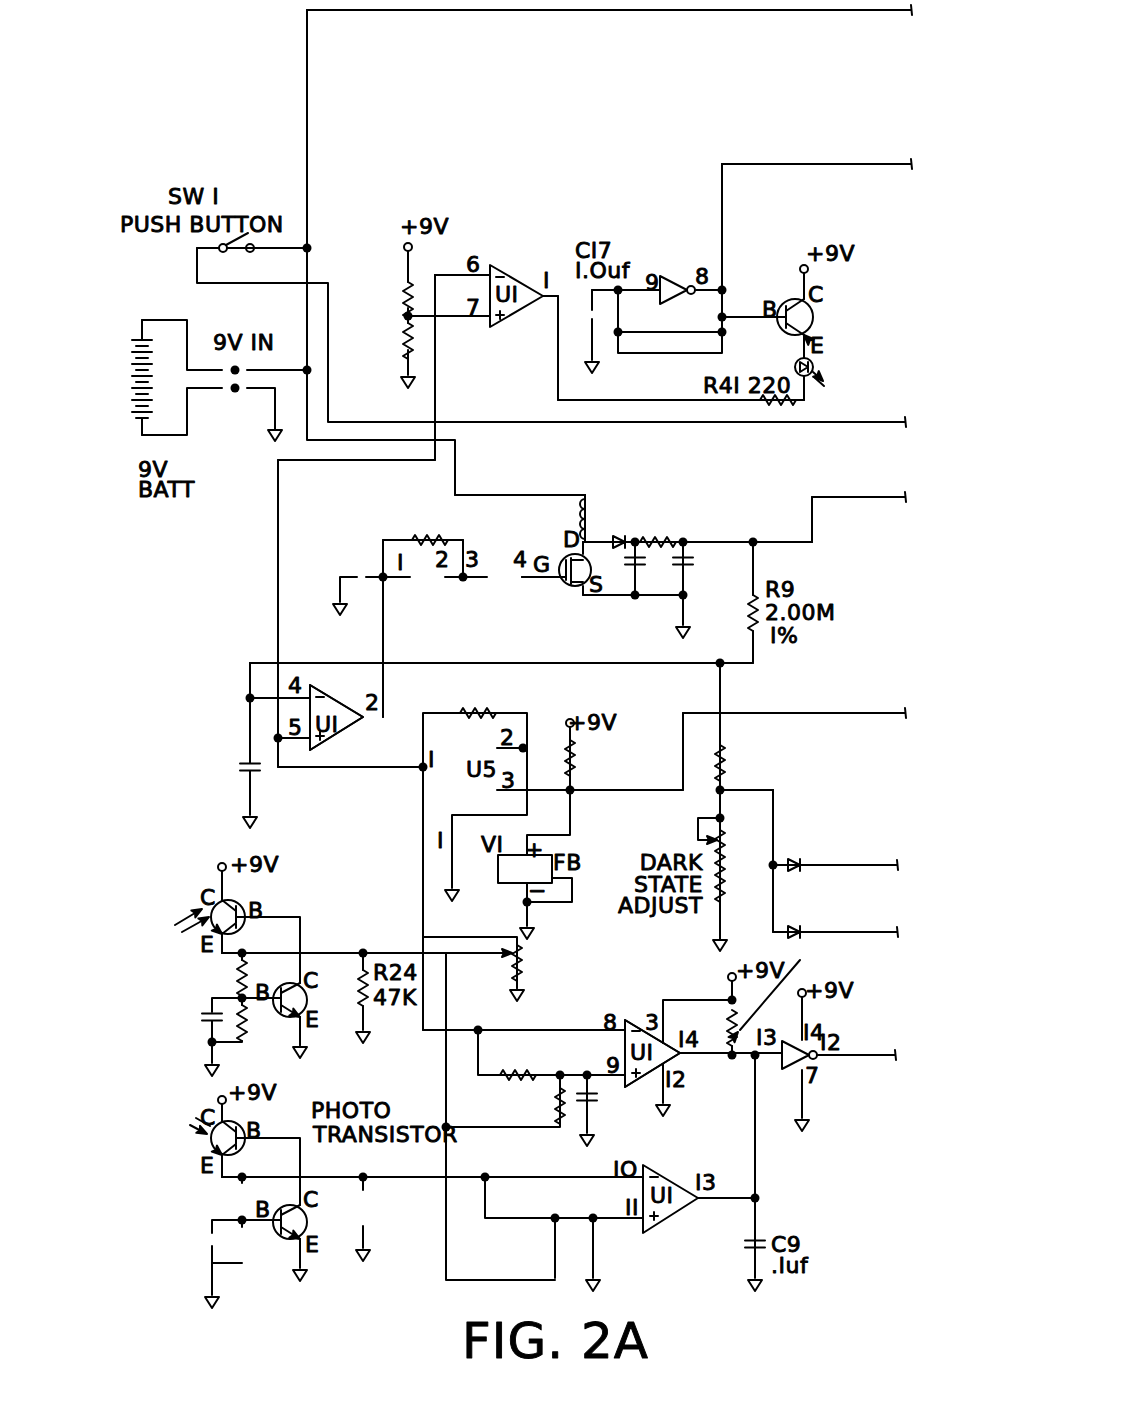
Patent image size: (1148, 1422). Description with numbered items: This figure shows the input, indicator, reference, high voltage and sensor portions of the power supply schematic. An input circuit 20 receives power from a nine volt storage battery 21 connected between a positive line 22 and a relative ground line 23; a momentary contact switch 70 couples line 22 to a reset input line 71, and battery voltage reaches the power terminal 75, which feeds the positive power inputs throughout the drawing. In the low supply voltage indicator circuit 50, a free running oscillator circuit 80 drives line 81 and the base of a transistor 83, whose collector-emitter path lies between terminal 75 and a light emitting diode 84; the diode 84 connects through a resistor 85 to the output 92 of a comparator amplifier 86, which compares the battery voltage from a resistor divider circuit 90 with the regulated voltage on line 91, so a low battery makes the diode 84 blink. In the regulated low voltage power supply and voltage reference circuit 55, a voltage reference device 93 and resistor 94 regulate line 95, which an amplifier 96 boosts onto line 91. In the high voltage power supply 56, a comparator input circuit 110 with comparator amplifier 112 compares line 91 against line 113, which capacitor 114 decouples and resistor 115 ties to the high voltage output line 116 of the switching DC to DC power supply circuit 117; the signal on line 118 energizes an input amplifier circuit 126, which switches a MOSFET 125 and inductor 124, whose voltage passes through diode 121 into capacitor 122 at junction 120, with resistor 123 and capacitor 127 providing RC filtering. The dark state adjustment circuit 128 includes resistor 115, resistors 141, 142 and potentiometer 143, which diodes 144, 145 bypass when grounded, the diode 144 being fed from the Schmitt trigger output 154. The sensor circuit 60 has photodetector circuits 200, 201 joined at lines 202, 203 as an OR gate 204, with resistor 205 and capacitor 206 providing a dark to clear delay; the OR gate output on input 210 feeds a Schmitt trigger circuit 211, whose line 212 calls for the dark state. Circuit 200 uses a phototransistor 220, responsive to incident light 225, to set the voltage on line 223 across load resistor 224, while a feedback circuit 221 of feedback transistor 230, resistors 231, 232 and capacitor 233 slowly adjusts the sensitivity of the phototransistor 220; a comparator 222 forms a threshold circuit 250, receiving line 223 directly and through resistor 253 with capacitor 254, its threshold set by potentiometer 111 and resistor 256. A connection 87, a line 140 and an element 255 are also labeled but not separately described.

The input circuit 20 is at (330, 190).
The electrical storage battery 21 is at (120, 355).
The positive electrical line 22 is at (307, 316).
The ground potential line 23 is at (270, 436).
The low supply voltage indicator circuit 50 is at (740, 145).
The regulated low voltage power supply and voltage reference circuit 55 is at (742, 733).
The high voltage power supply 56 is at (705, 470).
The sensor circuit 60 is at (388, 1268).
The momentary contact switch 70 is at (238, 252).
The reset input line 71 is at (900, 428).
The power terminal 75 is at (404, 247).
The free running oscillator circuit 80 is at (680, 265).
The oscillator output line 81 is at (722, 220).
The transistor 83 is at (815, 322).
The light emitting diode 84 is at (813, 362).
The resistor 85 is at (790, 402).
The comparator amplifier 86 is at (505, 280).
The input line 87 is at (435, 400).
The resistor divider circuit 90 is at (383, 338).
The regulated voltage line 91 is at (440, 270).
The comparator output 92 is at (558, 380).
The voltage reference device 93 is at (552, 862).
The resistor 94 is at (575, 755).
The reference voltage line 95 is at (905, 705).
The amplifier 96 is at (480, 690).
The comparator input circuit 110 is at (410, 688).
The adjustable potentiometer 111 is at (535, 987).
The comparator amplifier 112 is at (340, 700).
The inverting input line 113 is at (250, 660).
The capacitor 114 is at (238, 770).
The resistor 115 is at (750, 608).
The power output line 116 is at (795, 525).
The high voltage switching DC to DC power supply circuit 117 is at (590, 468).
The comparator output line 118 is at (383, 612).
The junction 120 is at (660, 525).
The diode 121 is at (617, 530).
The capacitor 122 is at (620, 622).
The resistor 123 is at (700, 540).
The inductor 124 is at (585, 505).
The field effect transistor 125 is at (560, 560).
The input amplifier circuit 126 is at (432, 520).
The capacitor 127 is at (695, 565).
The dark state adjustment circuit 128 is at (895, 806).
The line 140 is at (765, 782).
The resistor 141 is at (732, 762).
The resistor 142 is at (745, 872).
The adjustable potentiometer 143 is at (728, 845).
The diode 144 is at (800, 855).
The diode 145 is at (800, 922).
The Schmitt trigger output line 154 is at (860, 868).
The photodetector circuit 200 is at (185, 1100).
The photodetector circuit 201 is at (200, 1215).
The line 202 is at (735, 1062).
The line 203 is at (712, 1200).
The OR gate 204 is at (643, 1250).
The resistor 205 is at (792, 992).
The capacitor 206 is at (762, 1238).
The Schmitt trigger input 210 is at (785, 1062).
The Schmitt trigger circuit 211 is at (782, 1068).
The output line 212 is at (878, 1040).
The phototransistor 220 is at (212, 905).
The feedback circuit 221 is at (280, 1050).
The comparator circuit 222 is at (615, 1012).
The line 223 is at (330, 950).
The load resistor 224 is at (370, 1010).
The incident light 225 is at (160, 935).
The feedback transistor 230 is at (310, 1010).
The resistor 231 is at (235, 975).
The resistor 232 is at (248, 1030).
The capacitor 233 is at (205, 1015).
The sensor threshold establishing and detecting circuit 250 is at (632, 1100).
The resistor 253 is at (515, 1080).
The capacitor 254 is at (580, 1110).
The potentiometer 255 is at (525, 958).
The resistor 256 is at (558, 1095).